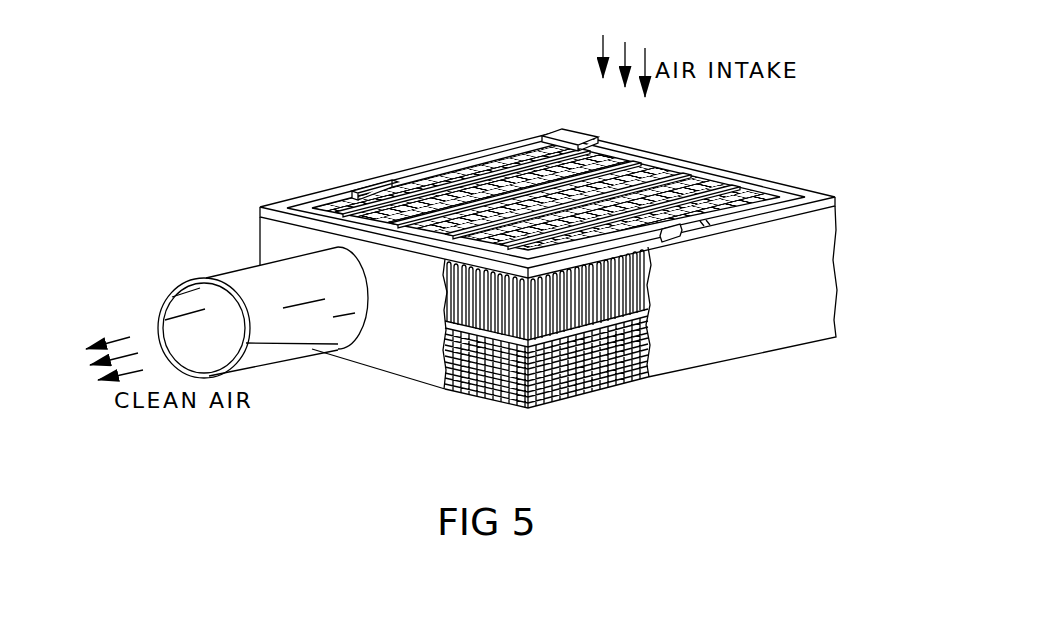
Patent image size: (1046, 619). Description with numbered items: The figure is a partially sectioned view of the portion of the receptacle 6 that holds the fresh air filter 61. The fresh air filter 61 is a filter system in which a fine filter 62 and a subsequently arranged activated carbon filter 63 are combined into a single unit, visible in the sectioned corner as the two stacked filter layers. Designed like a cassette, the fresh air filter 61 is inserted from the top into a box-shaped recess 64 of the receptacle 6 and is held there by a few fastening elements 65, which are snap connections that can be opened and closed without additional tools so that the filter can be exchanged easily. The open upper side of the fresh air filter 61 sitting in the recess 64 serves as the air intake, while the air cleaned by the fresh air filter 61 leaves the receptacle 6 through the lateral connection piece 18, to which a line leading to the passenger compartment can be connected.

The receptacle 6 is at (371, 138).
The connection piece 18 is at (230, 268).
The fresh air filter 61 is at (498, 196).
The fine filter 62 is at (577, 308).
The activated carbon filter 63 is at (573, 377).
The box-shaped recess 64 is at (410, 216).
The fastening elements 65 is at (380, 183).